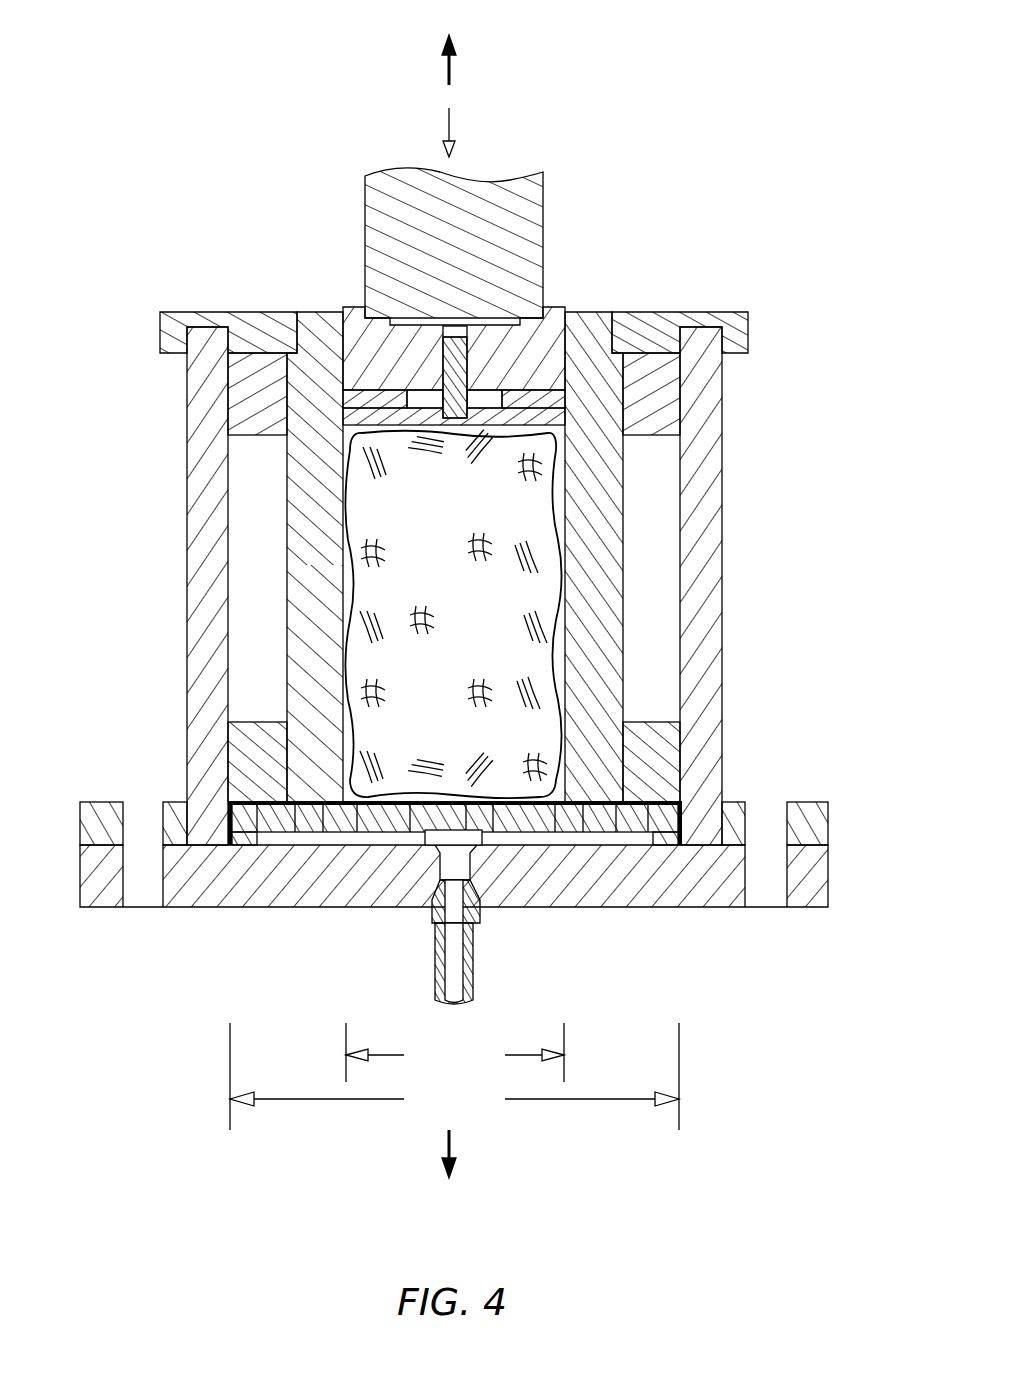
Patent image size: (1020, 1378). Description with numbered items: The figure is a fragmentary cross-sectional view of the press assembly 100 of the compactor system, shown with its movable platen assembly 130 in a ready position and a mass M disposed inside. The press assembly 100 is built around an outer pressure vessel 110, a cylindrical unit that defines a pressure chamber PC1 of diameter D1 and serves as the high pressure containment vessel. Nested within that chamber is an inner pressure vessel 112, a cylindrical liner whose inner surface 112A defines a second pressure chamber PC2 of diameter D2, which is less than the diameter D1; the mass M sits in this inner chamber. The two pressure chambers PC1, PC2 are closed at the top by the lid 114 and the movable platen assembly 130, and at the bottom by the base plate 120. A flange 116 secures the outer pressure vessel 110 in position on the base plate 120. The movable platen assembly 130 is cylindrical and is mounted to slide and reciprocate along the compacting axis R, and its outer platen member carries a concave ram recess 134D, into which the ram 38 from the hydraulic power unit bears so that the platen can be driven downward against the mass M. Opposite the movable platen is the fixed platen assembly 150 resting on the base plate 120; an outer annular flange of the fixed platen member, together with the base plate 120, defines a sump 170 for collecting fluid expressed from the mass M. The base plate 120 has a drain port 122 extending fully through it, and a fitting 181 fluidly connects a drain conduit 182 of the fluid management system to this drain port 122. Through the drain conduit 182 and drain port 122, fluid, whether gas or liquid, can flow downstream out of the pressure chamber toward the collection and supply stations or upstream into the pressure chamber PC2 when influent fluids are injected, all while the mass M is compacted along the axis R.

The press assembly 100 is at (167, 73).
The ram 38 is at (378, 175).
The concave ram recess 134D is at (543, 337).
The movable platen assembly 130 is at (563, 308).
The lid 114 is at (252, 312).
The outer pressure vessel 110 is at (710, 418).
The inner pressure vessel 112 is at (635, 495).
The inner surface 112A is at (348, 665).
The pressure chamber PC1 is at (257, 450).
The pressure chamber PC2 is at (352, 545).
The mass M is at (462, 521).
The sump 170 is at (230, 803).
The fixed platen assembly 150 is at (305, 835).
The drain port 122 is at (450, 862).
The fitting 181 is at (480, 925).
The drain conduit 182 is at (473, 985).
The base plate 120 is at (722, 897).
The flange 116 is at (812, 805).
The diameter D1 is at (454, 1076).
The diameter D2 is at (455, 1052).
The compacting axis R is at (450, 610).